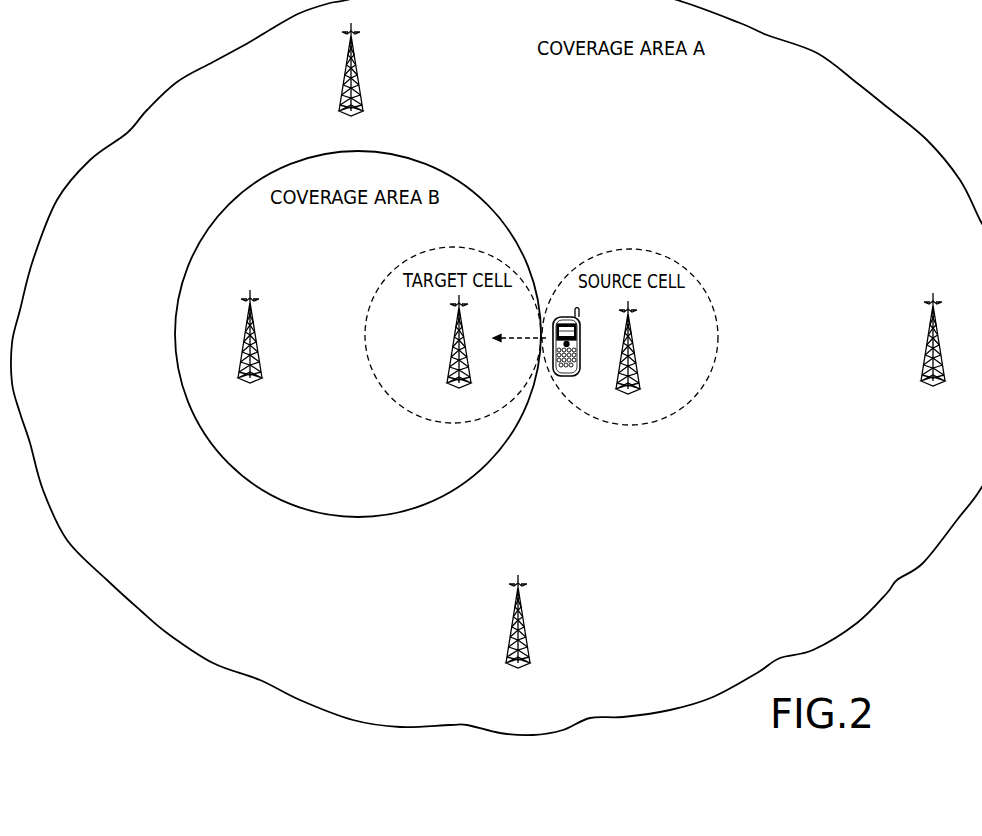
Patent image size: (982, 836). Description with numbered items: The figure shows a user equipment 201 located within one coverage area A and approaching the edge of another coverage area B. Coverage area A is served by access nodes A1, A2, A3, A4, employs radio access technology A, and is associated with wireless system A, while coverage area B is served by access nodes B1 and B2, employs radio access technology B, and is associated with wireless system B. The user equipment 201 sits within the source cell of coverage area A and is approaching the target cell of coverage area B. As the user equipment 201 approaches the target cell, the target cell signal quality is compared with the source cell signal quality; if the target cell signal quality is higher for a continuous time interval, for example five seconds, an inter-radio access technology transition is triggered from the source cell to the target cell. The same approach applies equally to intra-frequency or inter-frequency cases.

The user equipment 201 is at (566, 376).
The access node A1 is at (628, 358).
The access node A2 is at (933, 352).
The access node A3 is at (351, 82).
The access node A4 is at (518, 633).
The access node B1 is at (459, 353).
The access node B2 is at (250, 348).